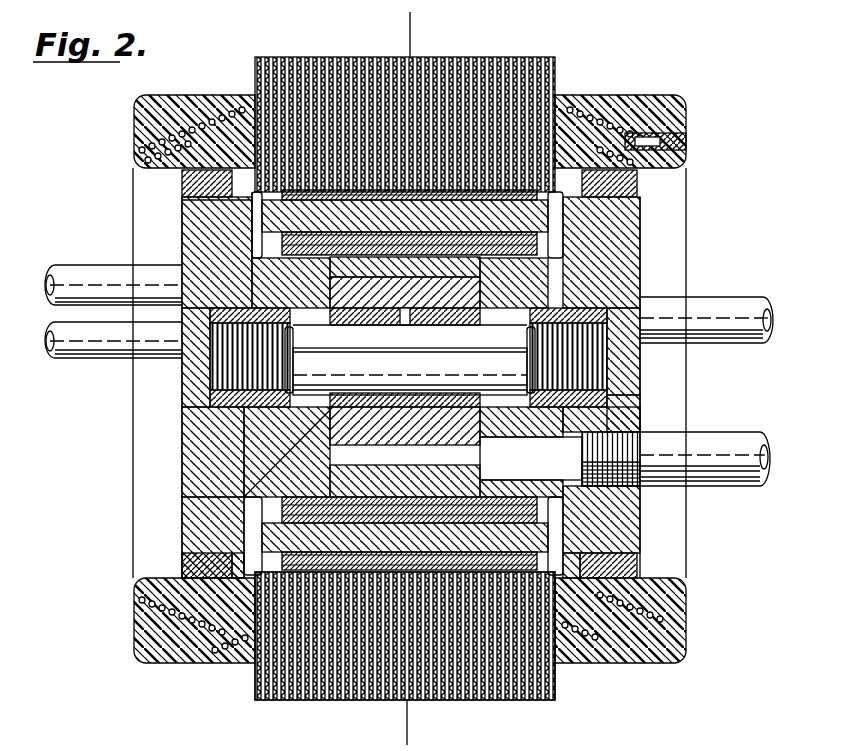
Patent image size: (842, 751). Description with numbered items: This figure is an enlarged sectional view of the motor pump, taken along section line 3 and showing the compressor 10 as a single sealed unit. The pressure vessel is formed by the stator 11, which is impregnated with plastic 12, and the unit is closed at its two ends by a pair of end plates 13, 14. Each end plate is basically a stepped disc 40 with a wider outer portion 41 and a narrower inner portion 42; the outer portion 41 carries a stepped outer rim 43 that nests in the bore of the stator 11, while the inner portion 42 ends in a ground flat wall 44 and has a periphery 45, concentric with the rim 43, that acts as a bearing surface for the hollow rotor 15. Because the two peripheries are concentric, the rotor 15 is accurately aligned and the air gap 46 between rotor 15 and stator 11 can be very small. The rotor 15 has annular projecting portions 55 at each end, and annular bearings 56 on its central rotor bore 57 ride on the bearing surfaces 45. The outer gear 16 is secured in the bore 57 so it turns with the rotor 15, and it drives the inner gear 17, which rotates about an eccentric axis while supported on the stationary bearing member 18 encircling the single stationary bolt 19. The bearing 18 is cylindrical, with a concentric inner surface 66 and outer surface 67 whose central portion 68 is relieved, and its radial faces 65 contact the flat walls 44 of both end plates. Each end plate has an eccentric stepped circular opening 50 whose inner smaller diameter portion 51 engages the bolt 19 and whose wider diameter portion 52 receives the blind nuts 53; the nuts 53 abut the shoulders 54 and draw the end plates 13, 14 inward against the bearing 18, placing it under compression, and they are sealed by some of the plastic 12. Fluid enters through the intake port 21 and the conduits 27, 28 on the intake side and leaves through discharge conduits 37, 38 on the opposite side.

The section line 3- 3 is at (392, 380).
The compressor 10 is at (538, 700).
The stator 11 is at (468, 700).
The plastic 12 is at (618, 98).
The end plate 13 is at (625, 245).
The end plate 14 is at (182, 468).
The hollow rotor 15 is at (548, 222).
The outer gear 16 is at (467, 483).
The inner gear 17 is at (442, 300).
The stationary bearing member 18 is at (350, 310).
The stationary bolt 19 is at (453, 372).
The intake port 21 is at (567, 466).
The conduit 27 is at (720, 300).
The conduit 28 is at (735, 487).
The conduit 37 is at (100, 357).
The conduit 38 is at (103, 265).
The stepped disc 40 is at (640, 268).
The outer portion 41 is at (190, 445).
The inner portion 42 is at (305, 298).
The stepped outer rim 43 is at (195, 192).
The flat wall 44 is at (340, 298).
The periphery 45 is at (327, 503).
The air gap 46 is at (540, 563).
The circular opening 50 is at (625, 403).
The inner smaller diameter portion 51 is at (410, 375).
The wider diameter portion 52 is at (610, 407).
The blind nuts 53 is at (190, 372).
The shoulders 54 is at (523, 403).
The projecting portions 55 is at (235, 232).
The annular bearings 56 is at (300, 257).
The central rotor bore 57 is at (410, 497).
The radial faces 65 is at (378, 400).
The inner surface 66 is at (376, 370).
The outer surface 67 is at (395, 325).
The central portion 68 is at (415, 325).